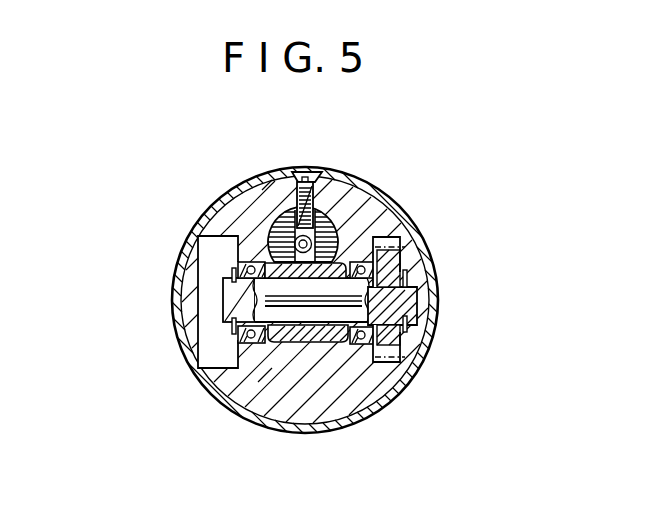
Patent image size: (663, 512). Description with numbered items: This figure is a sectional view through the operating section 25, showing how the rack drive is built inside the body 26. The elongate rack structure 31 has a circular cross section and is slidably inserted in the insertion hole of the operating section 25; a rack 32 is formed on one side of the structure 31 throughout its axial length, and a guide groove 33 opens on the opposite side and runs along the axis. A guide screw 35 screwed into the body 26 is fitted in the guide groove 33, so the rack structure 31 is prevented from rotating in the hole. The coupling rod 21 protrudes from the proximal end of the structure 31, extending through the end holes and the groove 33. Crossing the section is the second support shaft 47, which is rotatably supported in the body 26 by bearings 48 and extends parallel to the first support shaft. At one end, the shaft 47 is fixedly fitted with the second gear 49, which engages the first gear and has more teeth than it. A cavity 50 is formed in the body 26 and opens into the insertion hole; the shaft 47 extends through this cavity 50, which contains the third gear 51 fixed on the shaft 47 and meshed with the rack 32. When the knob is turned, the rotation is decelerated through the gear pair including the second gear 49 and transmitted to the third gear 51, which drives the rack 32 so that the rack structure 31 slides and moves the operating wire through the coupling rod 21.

The coupling rod 21 is at (311, 236).
The operating section 25 is at (458, 232).
The body 26 is at (225, 385).
The elongate rack structure 31 is at (342, 215).
The rack 32 is at (272, 238).
The guide groove 33 is at (265, 193).
The guide screw 35 is at (306, 176).
The second support shaft 47 is at (419, 306).
The bearings 48 is at (242, 340).
The second gear 49 is at (400, 340).
The cavity 50 is at (262, 378).
The third gear 51 is at (320, 348).